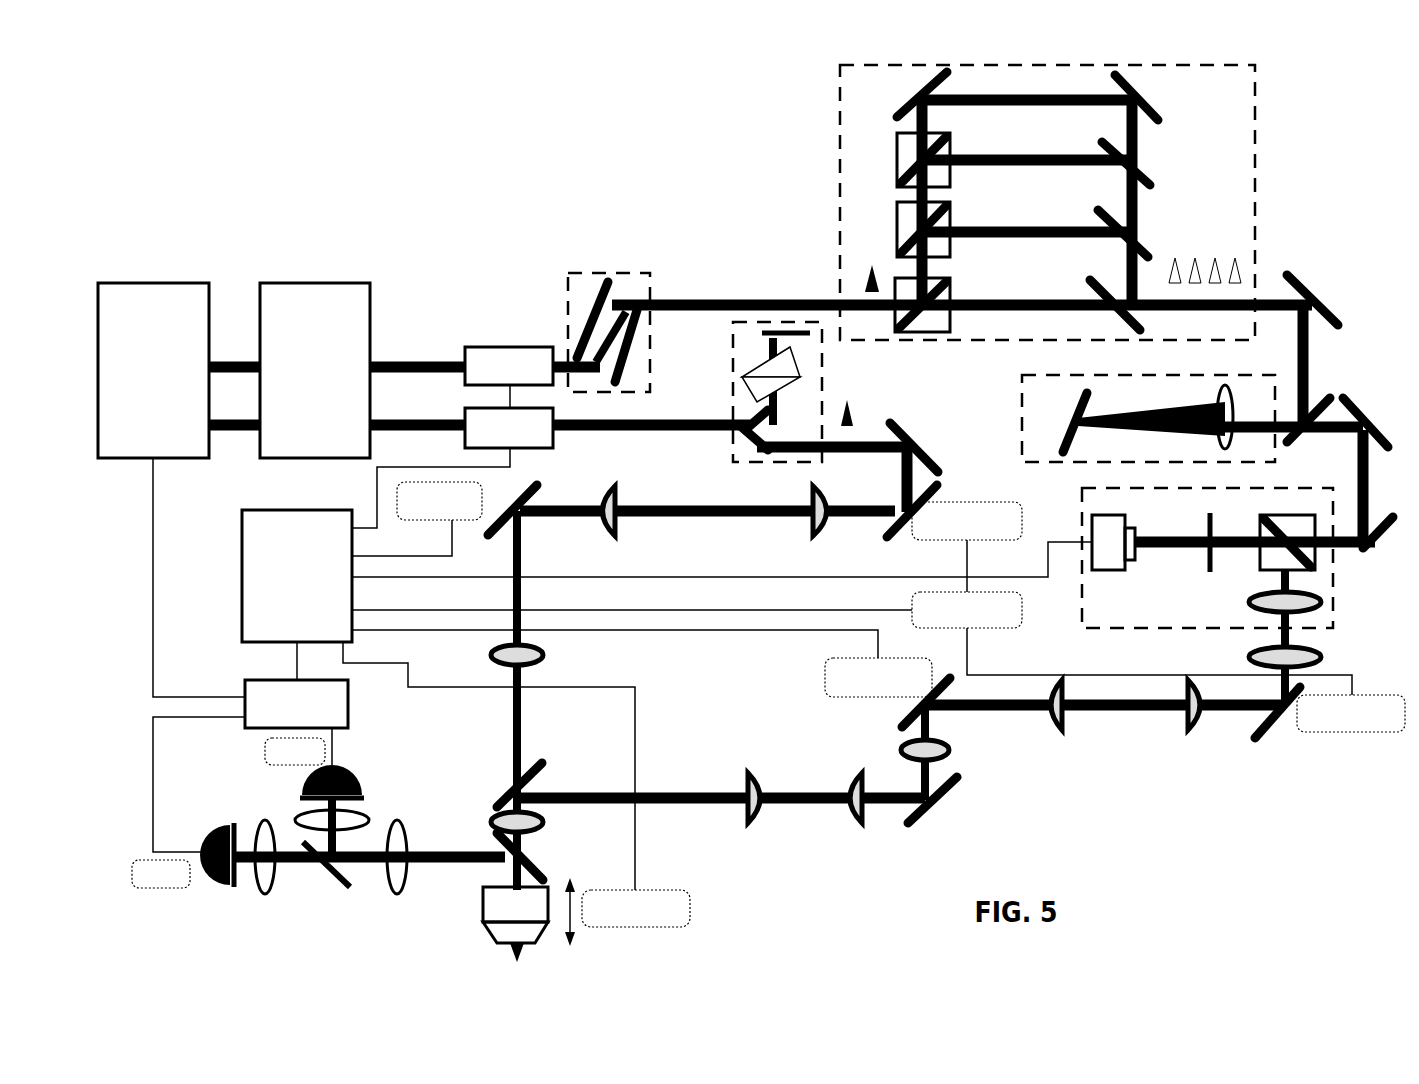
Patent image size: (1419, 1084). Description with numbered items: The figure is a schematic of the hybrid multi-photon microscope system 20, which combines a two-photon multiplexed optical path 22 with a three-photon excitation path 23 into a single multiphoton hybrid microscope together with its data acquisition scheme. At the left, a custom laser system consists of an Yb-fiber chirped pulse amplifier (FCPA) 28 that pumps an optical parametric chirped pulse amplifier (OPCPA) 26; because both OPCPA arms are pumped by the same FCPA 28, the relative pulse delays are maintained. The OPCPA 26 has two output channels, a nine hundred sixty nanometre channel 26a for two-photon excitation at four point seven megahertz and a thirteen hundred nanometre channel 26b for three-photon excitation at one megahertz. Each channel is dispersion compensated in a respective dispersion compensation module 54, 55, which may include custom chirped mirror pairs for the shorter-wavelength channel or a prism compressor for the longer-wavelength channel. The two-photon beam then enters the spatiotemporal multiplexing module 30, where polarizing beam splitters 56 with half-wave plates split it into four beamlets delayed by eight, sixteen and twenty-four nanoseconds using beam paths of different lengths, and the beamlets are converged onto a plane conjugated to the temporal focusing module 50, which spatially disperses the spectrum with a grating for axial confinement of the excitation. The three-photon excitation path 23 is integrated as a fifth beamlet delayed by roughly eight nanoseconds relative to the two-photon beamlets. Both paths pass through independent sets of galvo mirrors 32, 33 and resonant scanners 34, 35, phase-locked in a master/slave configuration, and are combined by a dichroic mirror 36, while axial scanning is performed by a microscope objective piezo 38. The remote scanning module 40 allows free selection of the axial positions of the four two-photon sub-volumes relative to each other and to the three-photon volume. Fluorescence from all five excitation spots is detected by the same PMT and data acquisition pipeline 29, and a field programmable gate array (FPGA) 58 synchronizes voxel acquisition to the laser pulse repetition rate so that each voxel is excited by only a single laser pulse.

The hybrid multi-photon microscope system 20 is at (255, 140).
The Yb-fiber chirped pulse amplifier (FCPA) 28 is at (160, 283).
The optical parametric chirped pulse amplifier (OPCPA) 26 is at (296, 283).
The 960 nm channel 26a is at (492, 347).
The 1,300 nm channel 26b is at (553, 448).
The dispersion compensation module 54 is at (647, 284).
The dispersion compensation module 55 is at (808, 320).
The polarizing beam splitter 56 is at (917, 95).
The spatiotemporal multiplexing module 30 is at (1079, 188).
The temporal focusing module 50 is at (1020, 388).
The 2p-MuST optical path 22 is at (1355, 478).
The resonant scanner 35 is at (940, 488).
The remote scanning module 40 is at (1335, 598).
The 3p excitation path 23 is at (668, 510).
The galvo mirror 33 is at (525, 515).
The galvo mirror 32 is at (938, 707).
The resonant scanner 34 is at (1265, 738).
The dichroic mirror 36 is at (548, 765).
The microscope objective piezo 38 is at (548, 885).
The field programmable gate array (FPGA) 58 is at (348, 708).
The PMT and data acquisition pipeline 29 is at (218, 880).